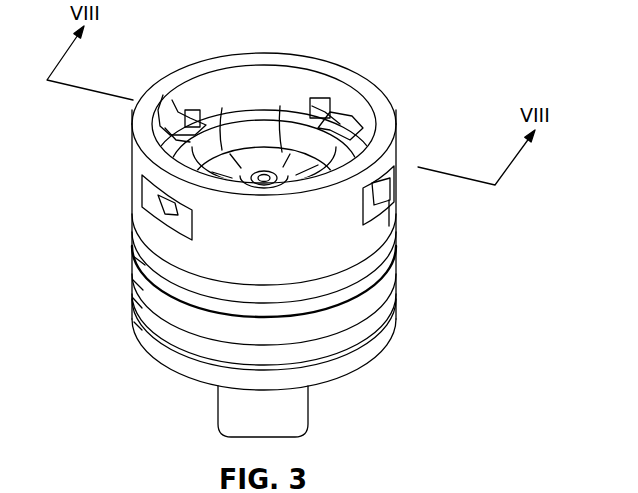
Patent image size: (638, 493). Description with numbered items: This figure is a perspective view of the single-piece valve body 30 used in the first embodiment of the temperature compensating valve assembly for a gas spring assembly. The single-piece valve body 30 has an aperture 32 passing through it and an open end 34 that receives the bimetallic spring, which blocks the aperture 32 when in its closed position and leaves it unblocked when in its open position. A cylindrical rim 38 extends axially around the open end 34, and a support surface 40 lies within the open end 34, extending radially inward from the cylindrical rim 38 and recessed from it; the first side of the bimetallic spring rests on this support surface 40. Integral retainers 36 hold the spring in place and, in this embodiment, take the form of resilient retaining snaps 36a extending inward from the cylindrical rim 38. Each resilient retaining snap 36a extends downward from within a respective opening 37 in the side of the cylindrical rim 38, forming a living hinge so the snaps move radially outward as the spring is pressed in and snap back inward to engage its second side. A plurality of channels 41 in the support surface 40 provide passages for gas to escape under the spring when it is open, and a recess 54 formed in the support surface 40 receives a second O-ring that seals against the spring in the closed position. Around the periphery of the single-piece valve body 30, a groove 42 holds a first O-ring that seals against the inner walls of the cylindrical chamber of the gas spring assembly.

The single-piece valve body 30 is at (383, 332).
The aperture 32 is at (260, 176).
The open end 34 is at (241, 80).
The integral retainers 36 is at (160, 94).
The resilient retaining snaps 36a is at (187, 110).
The opening 37 is at (165, 135).
The cylindrical rim 38 is at (143, 122).
The support surface 40 is at (160, 144).
The channels 41 is at (226, 110).
The groove 42 is at (357, 266).
The recess 54 is at (322, 157).